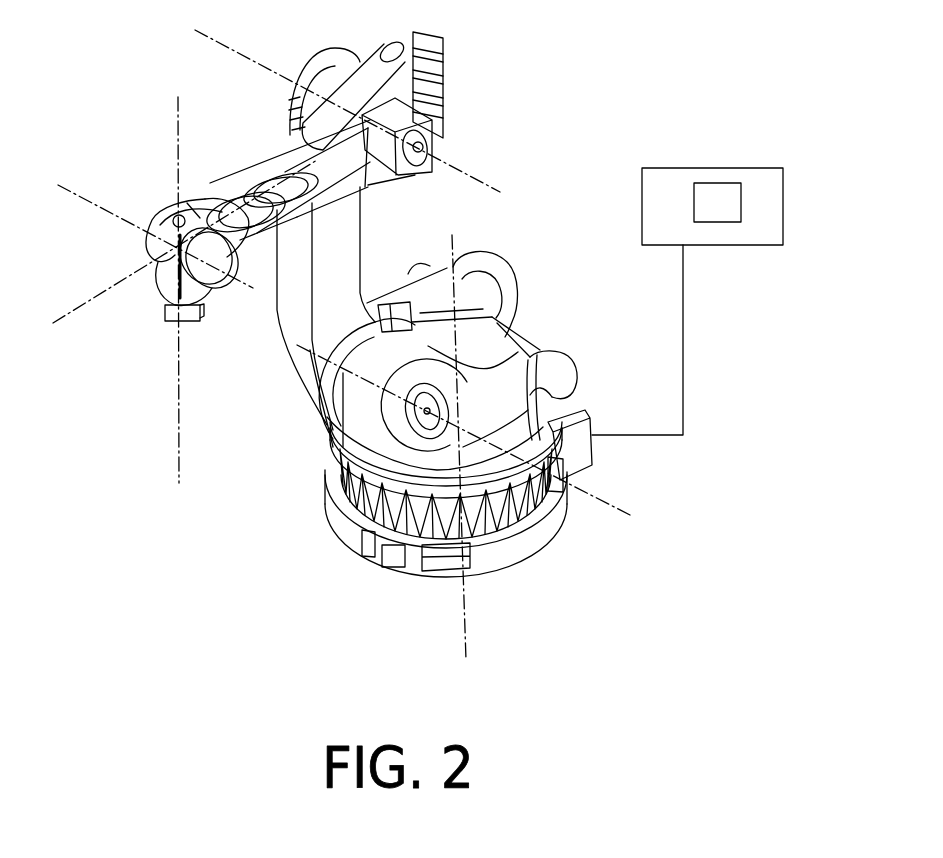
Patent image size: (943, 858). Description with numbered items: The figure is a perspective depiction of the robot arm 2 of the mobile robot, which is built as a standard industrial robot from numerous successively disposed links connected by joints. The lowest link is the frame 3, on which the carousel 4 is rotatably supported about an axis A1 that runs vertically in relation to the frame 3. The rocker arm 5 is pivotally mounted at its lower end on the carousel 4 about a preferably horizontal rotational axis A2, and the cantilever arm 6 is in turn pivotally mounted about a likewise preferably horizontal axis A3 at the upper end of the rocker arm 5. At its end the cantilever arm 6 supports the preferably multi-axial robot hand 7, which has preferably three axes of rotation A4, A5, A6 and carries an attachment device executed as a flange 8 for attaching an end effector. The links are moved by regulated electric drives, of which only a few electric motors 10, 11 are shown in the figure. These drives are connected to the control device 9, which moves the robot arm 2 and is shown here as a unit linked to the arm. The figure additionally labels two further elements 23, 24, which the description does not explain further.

The robot arm 2 is at (247, 492).
The frame 3 is at (460, 529).
The carousel 4 is at (545, 388).
The rocker arm 5 is at (347, 233).
The cantilever arm 6 is at (282, 153).
The robot hand 7 is at (207, 197).
The flange 8 is at (167, 310).
The control device 9 is at (687, 252).
The electric motor 10 is at (440, 133).
The electric motor 11 is at (432, 400).
The control unit 23 is at (718, 205).
The sensor module 24 is at (393, 557).
The axis A1 is at (467, 637).
The rotational axis A2 is at (617, 505).
The axis A3 is at (485, 182).
The axis of rotation A4 is at (70, 303).
The axis of rotation A5 is at (73, 190).
The axis of rotation A6 is at (175, 153).